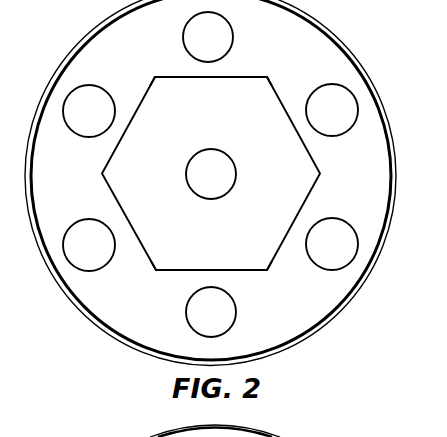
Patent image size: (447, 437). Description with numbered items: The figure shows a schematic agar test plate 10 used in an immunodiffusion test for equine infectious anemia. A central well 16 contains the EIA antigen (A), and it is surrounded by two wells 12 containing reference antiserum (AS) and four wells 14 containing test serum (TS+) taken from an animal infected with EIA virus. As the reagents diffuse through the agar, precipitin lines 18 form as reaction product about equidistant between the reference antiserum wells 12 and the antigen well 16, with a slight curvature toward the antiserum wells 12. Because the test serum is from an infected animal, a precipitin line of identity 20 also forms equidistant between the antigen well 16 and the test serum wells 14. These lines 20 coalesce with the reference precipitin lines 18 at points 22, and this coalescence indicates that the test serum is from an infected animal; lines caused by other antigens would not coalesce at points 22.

The test plate of agar 10 is at (88, 33).
The wells containing reference antiserum 12 is at (184, 37).
The wells containing test serum 14 is at (82, 122).
The central well containing EIA antigen 16 is at (186, 174).
The precipitin lines 18 is at (209, 77).
The precipitin line of identity 20 is at (130, 121).
The points of coalescence 22 is at (155, 77).